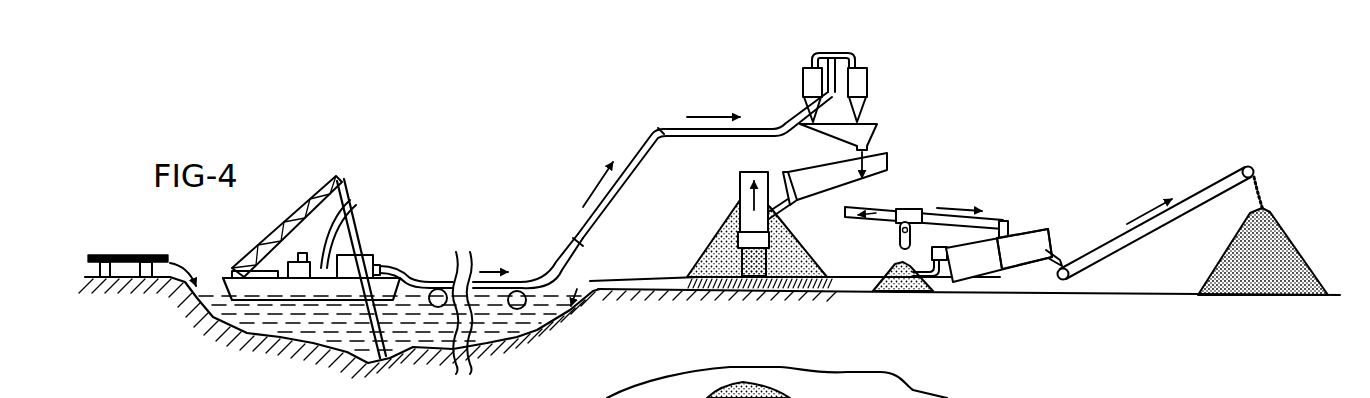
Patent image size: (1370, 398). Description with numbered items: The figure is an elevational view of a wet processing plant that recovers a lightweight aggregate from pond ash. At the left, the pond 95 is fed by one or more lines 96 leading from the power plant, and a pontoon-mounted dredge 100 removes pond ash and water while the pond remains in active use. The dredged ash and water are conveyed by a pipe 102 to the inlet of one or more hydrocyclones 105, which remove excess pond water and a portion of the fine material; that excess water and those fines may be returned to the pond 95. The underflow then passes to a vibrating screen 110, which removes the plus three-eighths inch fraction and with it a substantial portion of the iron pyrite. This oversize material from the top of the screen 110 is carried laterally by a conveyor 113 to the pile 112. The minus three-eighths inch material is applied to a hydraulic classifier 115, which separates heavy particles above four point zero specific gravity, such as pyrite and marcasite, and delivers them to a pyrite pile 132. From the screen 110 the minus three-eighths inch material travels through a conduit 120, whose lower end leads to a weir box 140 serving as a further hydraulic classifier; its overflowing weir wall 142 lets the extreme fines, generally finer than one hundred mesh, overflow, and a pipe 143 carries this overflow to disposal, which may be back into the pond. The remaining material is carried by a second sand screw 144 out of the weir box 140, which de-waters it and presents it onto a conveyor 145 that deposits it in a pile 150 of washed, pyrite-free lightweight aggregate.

The pond 95 is at (390, 323).
The lines 96 is at (142, 247).
The pontoon-mounted dredge 100 is at (237, 252).
The pipe 102 is at (455, 270).
The hydrocyclones 105 is at (810, 80).
The vibrating screen 110 is at (880, 167).
The pile 112 is at (710, 257).
The conveyor 113 is at (745, 193).
The hydraulic classifier 115 is at (913, 206).
The conduit 120 is at (867, 216).
The pyrite pile 132 is at (900, 292).
The weir box 140 is at (987, 263).
The overflowing weir wall 142 is at (965, 258).
The pipe 143 is at (703, 284).
The second sand screw 144 is at (1033, 237).
The conveyor 145 is at (1207, 190).
The pile 150 is at (1283, 240).